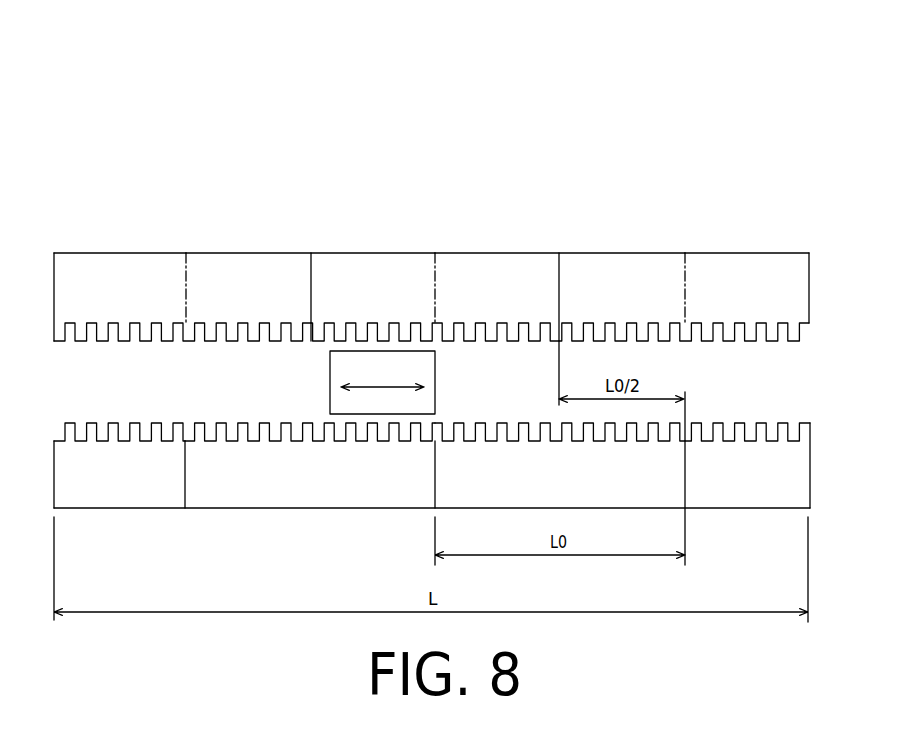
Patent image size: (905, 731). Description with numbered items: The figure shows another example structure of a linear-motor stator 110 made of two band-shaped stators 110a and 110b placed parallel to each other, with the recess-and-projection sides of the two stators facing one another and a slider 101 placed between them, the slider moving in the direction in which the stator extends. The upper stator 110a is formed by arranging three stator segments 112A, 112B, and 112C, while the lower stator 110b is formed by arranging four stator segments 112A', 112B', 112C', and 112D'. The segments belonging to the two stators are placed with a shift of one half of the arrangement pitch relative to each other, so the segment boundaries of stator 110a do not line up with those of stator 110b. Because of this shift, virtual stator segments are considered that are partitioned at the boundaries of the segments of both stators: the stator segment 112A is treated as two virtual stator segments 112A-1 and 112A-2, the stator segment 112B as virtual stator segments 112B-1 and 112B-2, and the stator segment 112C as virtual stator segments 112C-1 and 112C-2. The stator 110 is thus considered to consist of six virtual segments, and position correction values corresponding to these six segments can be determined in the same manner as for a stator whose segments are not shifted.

The stator 110 is at (523, 86).
The stator 110a is at (573, 241).
The stator 110b is at (335, 524).
The slider 101 is at (444, 382).
The stator segment 112A is at (182, 255).
The virtual stator segment 112A-1 is at (98, 285).
The virtual stator segment 112A-2 is at (248, 288).
The stator segment 112B is at (435, 255).
The virtual stator segment 112B-1 is at (358, 288).
The virtual stator segment 112B-2 is at (485, 287).
The stator segment 112C is at (684, 255).
The virtual stator segment 112C-1 is at (612, 288).
The virtual stator segment 112C-2 is at (737, 287).
The stator segment 112A' is at (119, 500).
The stator segment 112B' is at (310, 500).
The stator segment 112C' is at (560, 485).
The stator segment 112D' is at (747, 484).